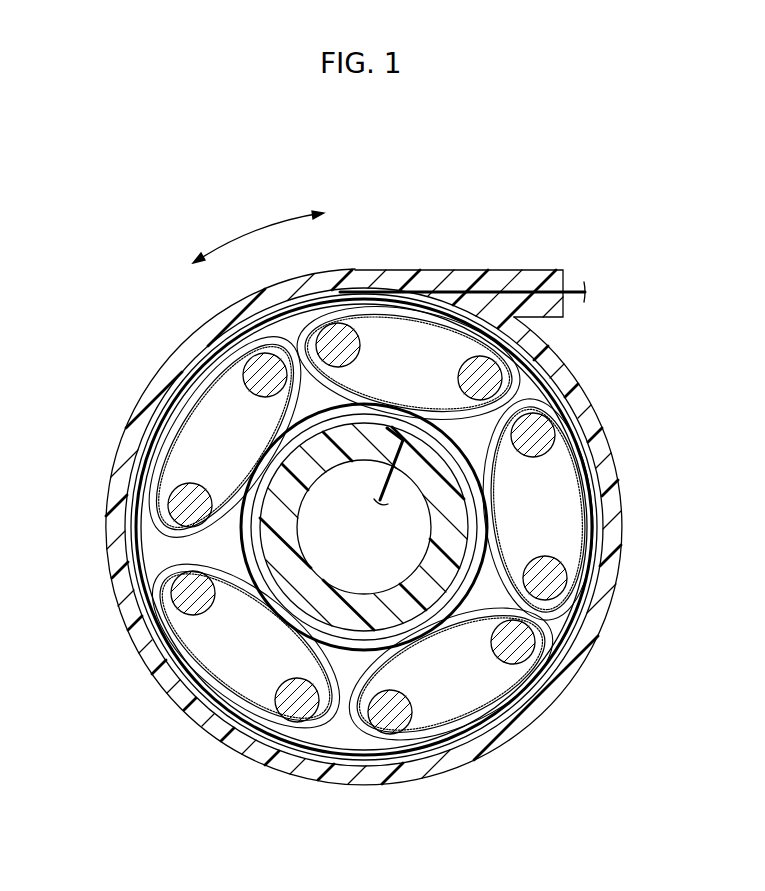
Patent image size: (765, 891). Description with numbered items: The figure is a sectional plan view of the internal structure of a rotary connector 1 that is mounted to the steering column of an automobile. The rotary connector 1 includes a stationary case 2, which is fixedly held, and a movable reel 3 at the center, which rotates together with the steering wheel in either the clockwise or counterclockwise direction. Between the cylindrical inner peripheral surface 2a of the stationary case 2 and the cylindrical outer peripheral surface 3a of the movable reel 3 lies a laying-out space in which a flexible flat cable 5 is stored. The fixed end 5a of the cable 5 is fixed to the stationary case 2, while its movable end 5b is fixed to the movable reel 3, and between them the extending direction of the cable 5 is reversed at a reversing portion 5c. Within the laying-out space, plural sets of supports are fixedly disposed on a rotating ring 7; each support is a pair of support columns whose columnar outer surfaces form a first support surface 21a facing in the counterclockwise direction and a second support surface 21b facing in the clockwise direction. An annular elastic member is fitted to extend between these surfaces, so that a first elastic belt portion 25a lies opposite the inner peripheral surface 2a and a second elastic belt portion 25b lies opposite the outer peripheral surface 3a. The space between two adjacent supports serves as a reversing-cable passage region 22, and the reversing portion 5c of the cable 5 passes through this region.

The rotary connector 1 is at (425, 197).
The stationary case 2 is at (590, 637).
The inner peripheral surface 2a is at (548, 694).
The movable reel 3 is at (427, 558).
The outer peripheral surface 3a is at (150, 556).
The cable 5 is at (545, 365).
The fixed end 5a is at (524, 300).
The movable end 5b is at (392, 452).
The reversing portion 5c is at (297, 338).
The rotating ring 7 is at (345, 746).
The first support surface 21a is at (328, 330).
The second support surface 21b is at (250, 362).
The reversing-cable passage region 22 is at (305, 372).
The first elastic belt portion 25a is at (417, 307).
The second elastic belt portion 25b is at (271, 447).